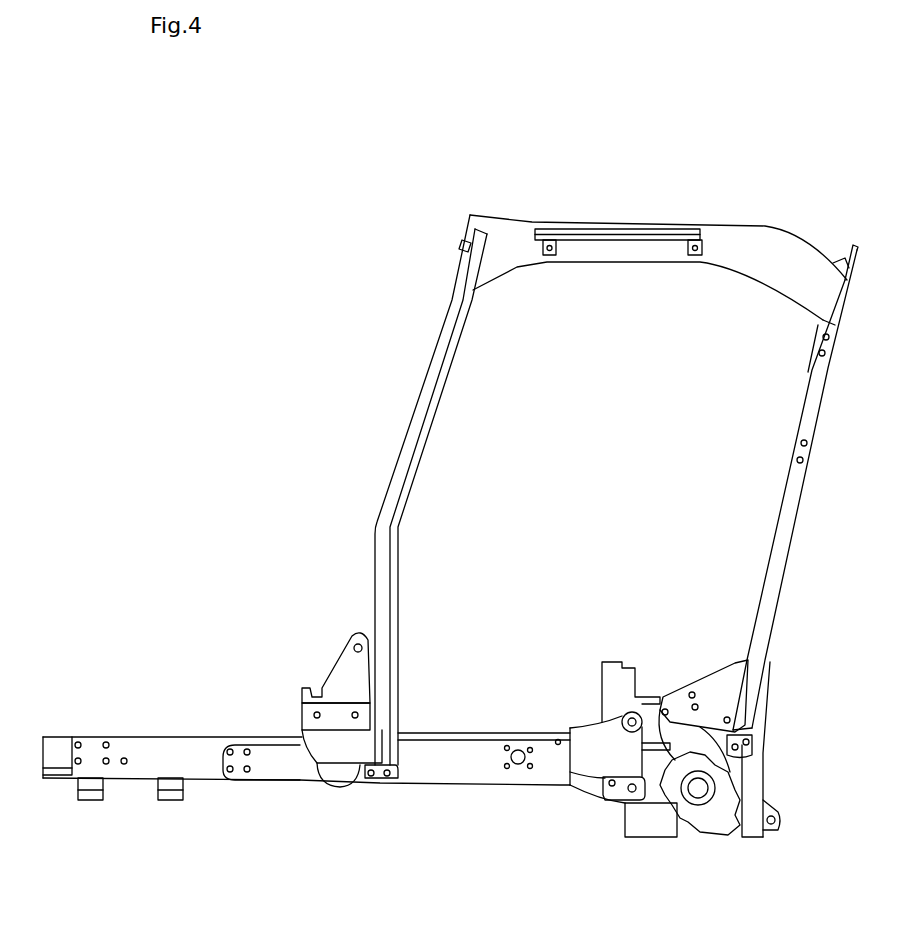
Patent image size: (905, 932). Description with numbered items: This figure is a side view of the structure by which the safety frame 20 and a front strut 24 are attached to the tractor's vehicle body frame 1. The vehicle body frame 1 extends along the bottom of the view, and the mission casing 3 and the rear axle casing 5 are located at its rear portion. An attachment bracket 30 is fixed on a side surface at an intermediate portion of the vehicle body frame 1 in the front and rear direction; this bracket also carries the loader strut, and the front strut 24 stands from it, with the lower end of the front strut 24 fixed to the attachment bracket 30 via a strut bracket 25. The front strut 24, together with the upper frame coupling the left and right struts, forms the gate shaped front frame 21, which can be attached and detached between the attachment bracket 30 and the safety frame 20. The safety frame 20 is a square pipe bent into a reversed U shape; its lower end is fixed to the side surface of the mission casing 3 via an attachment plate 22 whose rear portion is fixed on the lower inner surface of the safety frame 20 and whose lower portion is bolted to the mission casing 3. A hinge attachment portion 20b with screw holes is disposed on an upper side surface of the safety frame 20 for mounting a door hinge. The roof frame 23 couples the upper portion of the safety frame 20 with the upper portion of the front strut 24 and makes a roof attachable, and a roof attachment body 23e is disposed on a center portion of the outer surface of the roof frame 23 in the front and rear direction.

The vehicle body frame 1 is at (462, 767).
The mission casing 3 is at (645, 817).
The rear axle casing 5 is at (717, 810).
The safety frame 20 is at (778, 532).
The hinge attachment portion 20b is at (796, 454).
The front frame 21 is at (433, 212).
The attachment plate 22 is at (717, 683).
The roof frame 23 is at (510, 235).
The roof attachment body 23e is at (641, 222).
The front strut 24 is at (432, 368).
The strut bracket 25 is at (345, 753).
The attachment bracket 30 is at (345, 670).